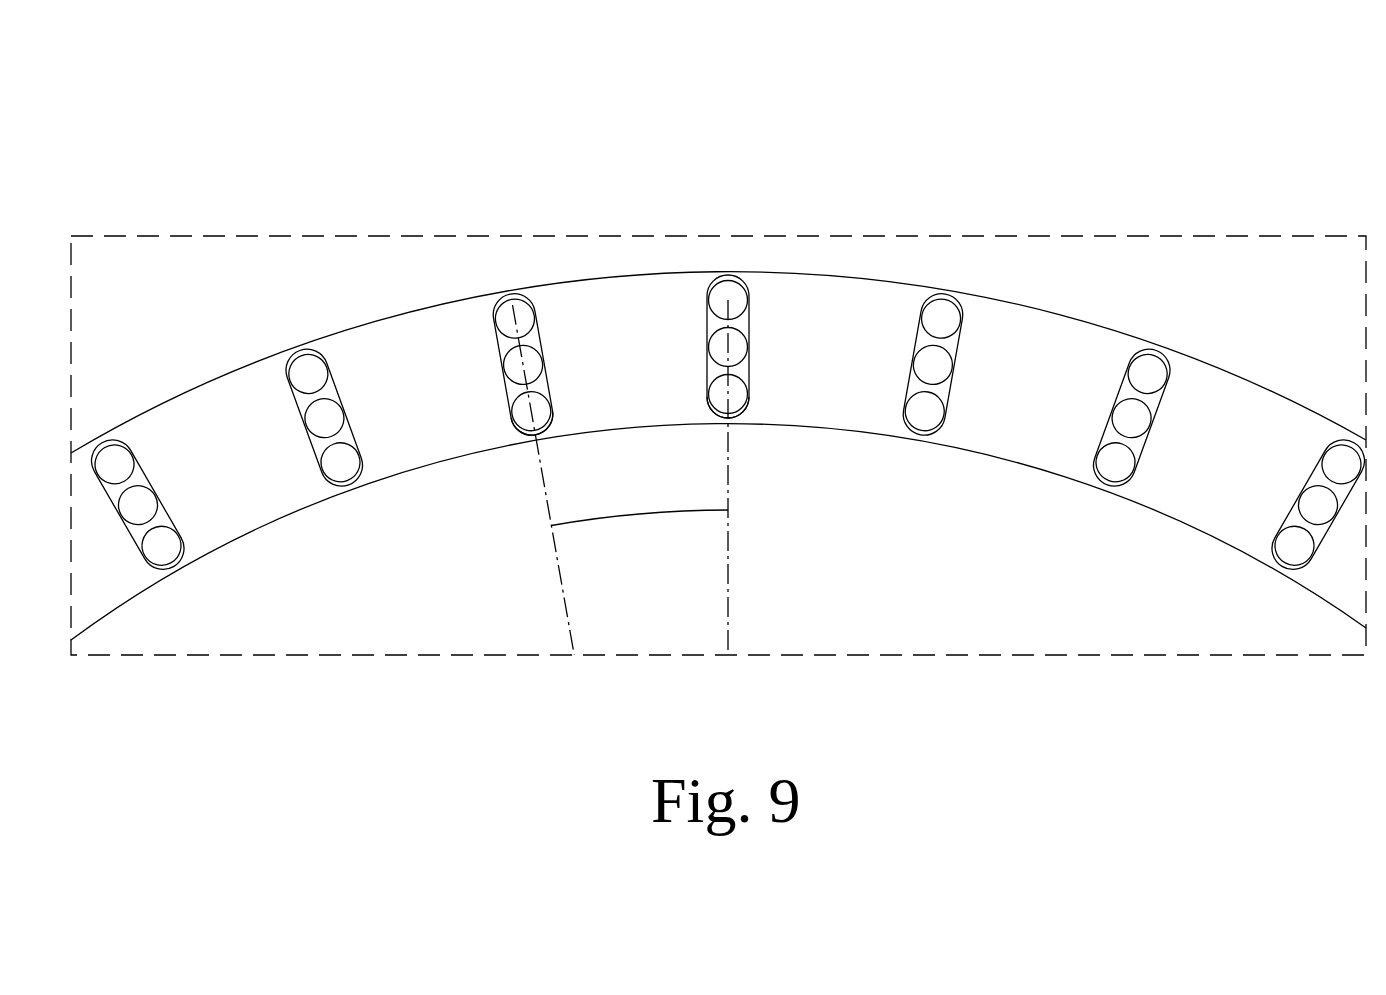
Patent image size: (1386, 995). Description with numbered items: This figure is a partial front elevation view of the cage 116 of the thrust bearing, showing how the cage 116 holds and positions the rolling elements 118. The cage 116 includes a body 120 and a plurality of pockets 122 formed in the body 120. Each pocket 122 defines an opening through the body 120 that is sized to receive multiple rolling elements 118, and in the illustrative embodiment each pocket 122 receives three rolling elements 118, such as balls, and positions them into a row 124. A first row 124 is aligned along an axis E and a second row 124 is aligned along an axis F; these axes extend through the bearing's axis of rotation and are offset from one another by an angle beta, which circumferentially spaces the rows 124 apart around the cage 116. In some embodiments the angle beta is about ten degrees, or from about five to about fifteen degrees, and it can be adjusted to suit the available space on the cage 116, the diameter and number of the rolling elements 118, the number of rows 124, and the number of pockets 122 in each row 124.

The cage 116 is at (1187, 172).
The rolling elements 118 is at (614, 351).
The body 120 is at (1038, 357).
The pockets 122 is at (495, 344).
The rows 124 is at (525, 437).